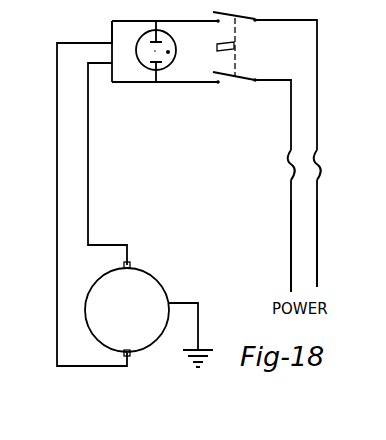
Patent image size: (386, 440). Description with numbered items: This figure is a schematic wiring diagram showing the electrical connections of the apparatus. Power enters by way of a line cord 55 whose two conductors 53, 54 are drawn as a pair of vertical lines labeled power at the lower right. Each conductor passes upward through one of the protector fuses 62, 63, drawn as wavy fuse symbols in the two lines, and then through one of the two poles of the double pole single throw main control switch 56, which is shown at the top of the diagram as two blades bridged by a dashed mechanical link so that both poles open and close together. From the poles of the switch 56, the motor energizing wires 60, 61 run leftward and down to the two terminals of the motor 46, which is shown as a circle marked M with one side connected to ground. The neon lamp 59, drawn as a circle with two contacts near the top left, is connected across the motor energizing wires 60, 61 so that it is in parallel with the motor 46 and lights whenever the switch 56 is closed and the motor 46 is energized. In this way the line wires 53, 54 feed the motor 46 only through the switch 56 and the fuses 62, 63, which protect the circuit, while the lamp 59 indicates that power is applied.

The motor 46 is at (157, 282).
The conductor 53 is at (291, 243).
The conductor 54 is at (317, 247).
The line cord 55 is at (298, 208).
The double pole single throw main control switch 56 is at (238, 58).
The neon lamp 59 is at (144, 59).
The motor energizing wire 60 is at (88, 145).
The motor energizing wire 61 is at (57, 105).
The protector fuse 62 is at (288, 162).
The protector fuse 63 is at (320, 150).